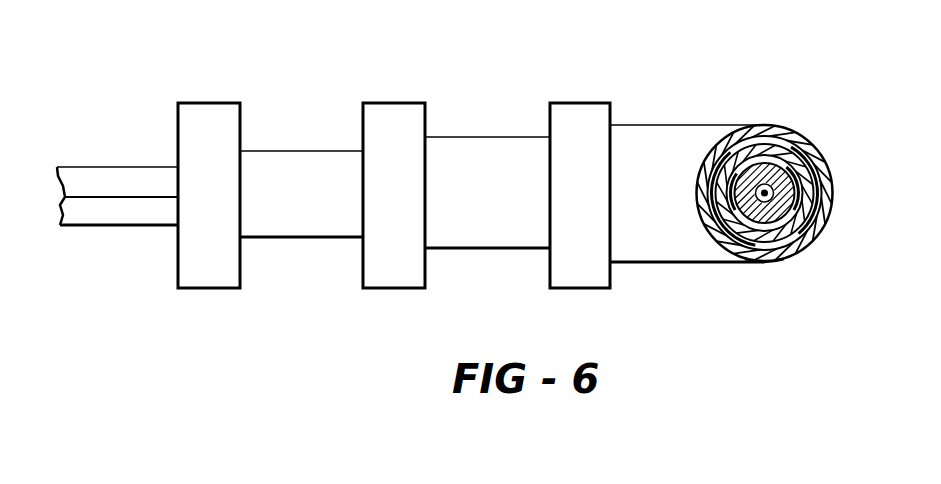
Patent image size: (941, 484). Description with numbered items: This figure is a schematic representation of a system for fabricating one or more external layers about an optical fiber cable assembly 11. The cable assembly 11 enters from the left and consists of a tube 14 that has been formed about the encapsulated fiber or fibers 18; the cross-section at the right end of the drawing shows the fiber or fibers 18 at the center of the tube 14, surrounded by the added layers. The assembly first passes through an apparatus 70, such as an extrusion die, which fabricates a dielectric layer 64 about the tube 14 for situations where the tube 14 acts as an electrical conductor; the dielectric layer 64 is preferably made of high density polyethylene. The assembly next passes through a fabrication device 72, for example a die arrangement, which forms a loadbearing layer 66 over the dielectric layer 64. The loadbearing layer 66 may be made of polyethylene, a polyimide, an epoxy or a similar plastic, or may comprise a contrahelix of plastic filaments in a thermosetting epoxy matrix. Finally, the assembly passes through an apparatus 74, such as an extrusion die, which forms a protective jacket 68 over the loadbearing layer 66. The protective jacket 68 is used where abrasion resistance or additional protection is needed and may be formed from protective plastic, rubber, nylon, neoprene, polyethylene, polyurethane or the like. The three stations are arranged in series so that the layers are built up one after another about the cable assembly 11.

The cable assembly 11 is at (96, 177).
The tube 14 is at (778, 197).
The fiber or fibers 18 is at (761, 262).
The dielectric layer 64 is at (297, 157).
The loadbearing layer 66 is at (485, 137).
The protective jacket 68 is at (671, 132).
The apparatus 70 is at (204, 103).
The fabrication device 72 is at (392, 103).
The apparatus 74 is at (575, 103).